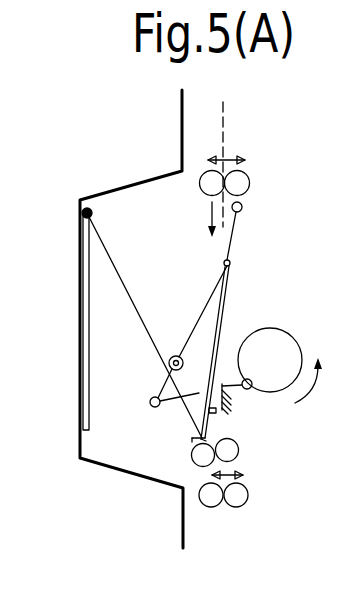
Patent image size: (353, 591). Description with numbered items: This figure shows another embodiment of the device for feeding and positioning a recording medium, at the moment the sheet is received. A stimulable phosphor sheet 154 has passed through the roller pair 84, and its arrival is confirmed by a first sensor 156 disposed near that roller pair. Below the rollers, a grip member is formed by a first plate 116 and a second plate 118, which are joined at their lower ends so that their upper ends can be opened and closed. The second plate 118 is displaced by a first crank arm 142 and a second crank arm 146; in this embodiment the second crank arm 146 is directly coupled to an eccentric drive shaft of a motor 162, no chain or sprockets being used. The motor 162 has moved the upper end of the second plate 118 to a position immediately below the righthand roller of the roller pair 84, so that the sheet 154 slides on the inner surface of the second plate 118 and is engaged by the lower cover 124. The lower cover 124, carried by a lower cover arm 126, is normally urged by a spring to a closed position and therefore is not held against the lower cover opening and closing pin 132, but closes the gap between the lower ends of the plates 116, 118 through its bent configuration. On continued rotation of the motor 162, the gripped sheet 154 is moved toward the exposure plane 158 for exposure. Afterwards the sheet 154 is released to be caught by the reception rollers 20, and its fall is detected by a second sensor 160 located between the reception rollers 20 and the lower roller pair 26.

The stimulable phosphor sheet 154 is at (226, 124).
The first sensor 156 is at (247, 160).
The roller pair 84 is at (250, 186).
The second plate 118 is at (233, 242).
The first crank arm 142 is at (207, 302).
The lower cover opening and closing pin 132 is at (221, 386).
The motor 162 is at (289, 335).
The first plate 116 is at (118, 270).
The exposure plane 158 is at (83, 333).
The second crank arm 146 is at (193, 397).
The lower cover arm 126 is at (206, 440).
The reception rollers 20 is at (239, 452).
The second sensor 160 is at (245, 476).
The lower cover 124 is at (197, 441).
The roller pair 26 is at (212, 507).